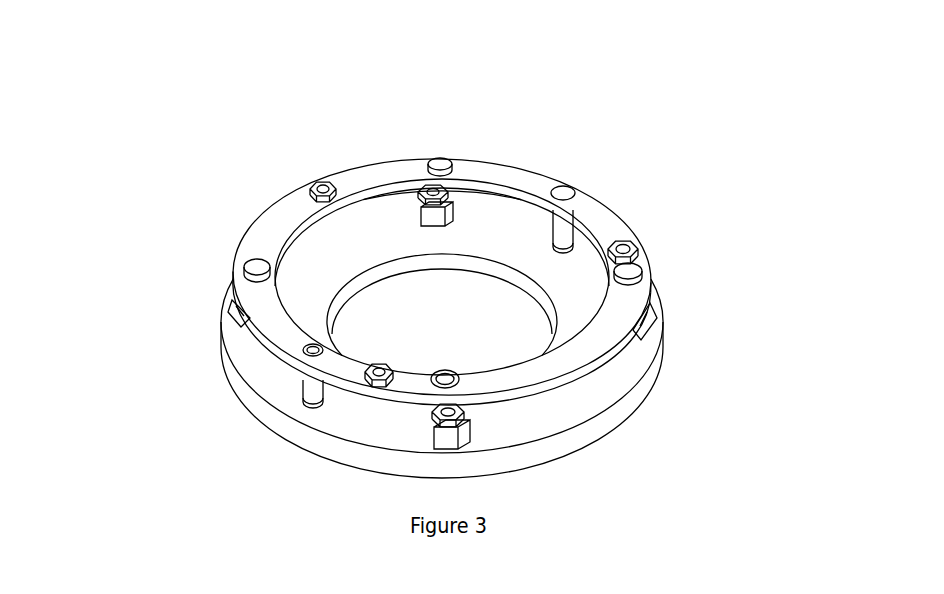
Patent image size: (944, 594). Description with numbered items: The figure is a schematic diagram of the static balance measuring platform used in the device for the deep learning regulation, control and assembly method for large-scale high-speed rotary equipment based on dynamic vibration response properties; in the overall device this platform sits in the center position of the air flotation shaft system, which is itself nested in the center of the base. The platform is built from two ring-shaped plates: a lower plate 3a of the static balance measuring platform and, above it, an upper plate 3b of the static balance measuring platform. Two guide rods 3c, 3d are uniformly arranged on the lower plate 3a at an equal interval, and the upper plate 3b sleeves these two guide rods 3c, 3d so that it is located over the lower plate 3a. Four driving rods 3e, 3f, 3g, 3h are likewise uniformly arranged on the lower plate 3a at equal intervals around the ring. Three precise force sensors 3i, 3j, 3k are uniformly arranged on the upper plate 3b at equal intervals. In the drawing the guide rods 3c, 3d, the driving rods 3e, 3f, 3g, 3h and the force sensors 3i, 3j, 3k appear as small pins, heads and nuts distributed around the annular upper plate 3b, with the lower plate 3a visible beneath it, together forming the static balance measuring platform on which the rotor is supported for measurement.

The lower plate of the static balance measuring platform 3a is at (580, 418).
The upper plate of the static balance measuring platform 3b is at (490, 175).
The guide rod 3c is at (310, 390).
The guide rod 3d is at (563, 237).
The driving rod 3e is at (445, 380).
The driving rod 3f is at (630, 272).
The driving rod 3g is at (257, 272).
The driving rod 3h is at (440, 168).
The precise force sensor 3i is at (380, 370).
The precise force sensor 3j is at (630, 245).
The precise force sensor 3k is at (325, 188).